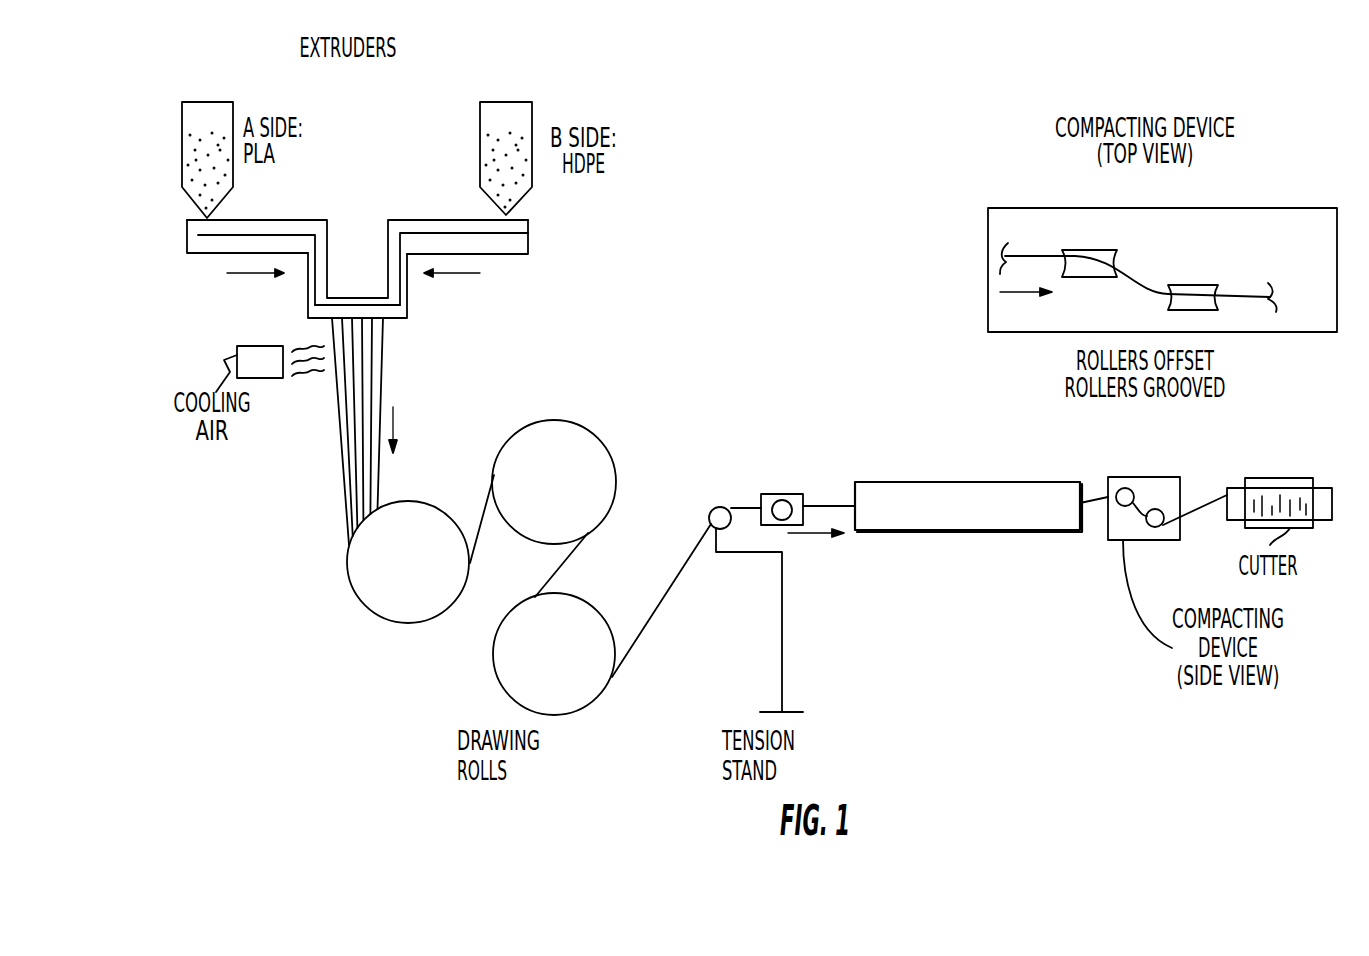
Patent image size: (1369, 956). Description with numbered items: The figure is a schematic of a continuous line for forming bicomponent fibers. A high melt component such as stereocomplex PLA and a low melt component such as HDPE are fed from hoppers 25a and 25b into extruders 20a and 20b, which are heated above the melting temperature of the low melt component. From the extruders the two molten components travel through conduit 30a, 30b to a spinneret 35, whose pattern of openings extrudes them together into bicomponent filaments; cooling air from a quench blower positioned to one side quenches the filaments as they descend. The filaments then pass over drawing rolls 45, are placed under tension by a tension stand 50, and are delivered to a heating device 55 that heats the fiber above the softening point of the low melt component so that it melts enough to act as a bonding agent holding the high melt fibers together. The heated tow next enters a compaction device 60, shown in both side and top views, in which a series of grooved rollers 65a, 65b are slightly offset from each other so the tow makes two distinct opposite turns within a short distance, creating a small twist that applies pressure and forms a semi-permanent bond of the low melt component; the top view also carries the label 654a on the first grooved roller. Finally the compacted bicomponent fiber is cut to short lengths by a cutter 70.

The extruder 20a is at (187, 235).
The extruder 20b is at (528, 233).
The hopper 25a is at (182, 148).
The hopper 25b is at (520, 102).
The conduit 30a is at (308, 280).
The conduit 30b is at (407, 288).
The spinneret 35 is at (397, 318).
The drawing rolls 45 is at (577, 423).
The tension stand 50 is at (782, 613).
The heating device 55 is at (970, 482).
The compaction device 60 is at (1152, 540).
The roller 65a is at (1120, 490).
The roller 65b is at (1215, 300).
The first compacting roller (top view) 654a is at (1085, 250).
The cutter 70 is at (1295, 478).